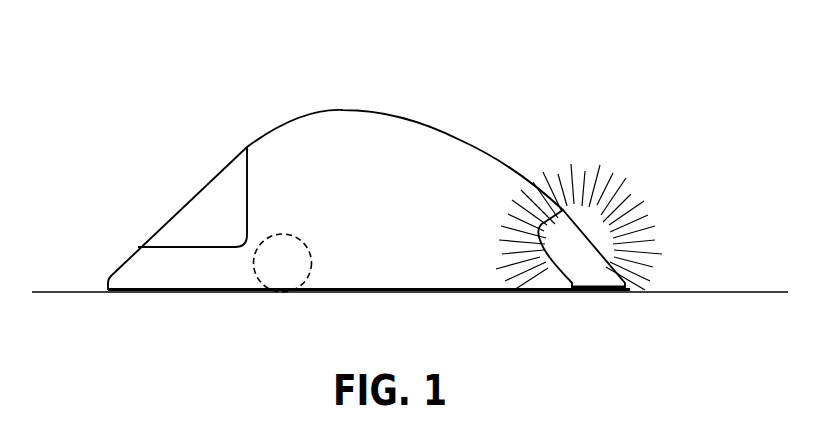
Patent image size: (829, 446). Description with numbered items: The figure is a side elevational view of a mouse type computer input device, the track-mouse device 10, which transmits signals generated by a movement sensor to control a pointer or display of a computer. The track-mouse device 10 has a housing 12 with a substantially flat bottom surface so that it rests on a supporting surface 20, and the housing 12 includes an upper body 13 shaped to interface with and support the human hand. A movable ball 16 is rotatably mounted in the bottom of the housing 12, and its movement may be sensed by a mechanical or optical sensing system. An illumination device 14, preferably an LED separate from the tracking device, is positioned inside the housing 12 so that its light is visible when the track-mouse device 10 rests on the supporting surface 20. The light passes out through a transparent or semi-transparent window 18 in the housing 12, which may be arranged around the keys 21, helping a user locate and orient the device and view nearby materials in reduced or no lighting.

The track-mouse device 10 is at (397, 176).
The housing 12 is at (226, 159).
The upper body 13 is at (453, 157).
The illumination device 14 is at (552, 223).
The movable ball 16 is at (307, 268).
The window 18 is at (640, 198).
The supporting surface 20 is at (685, 291).
The keys 21 is at (248, 185).